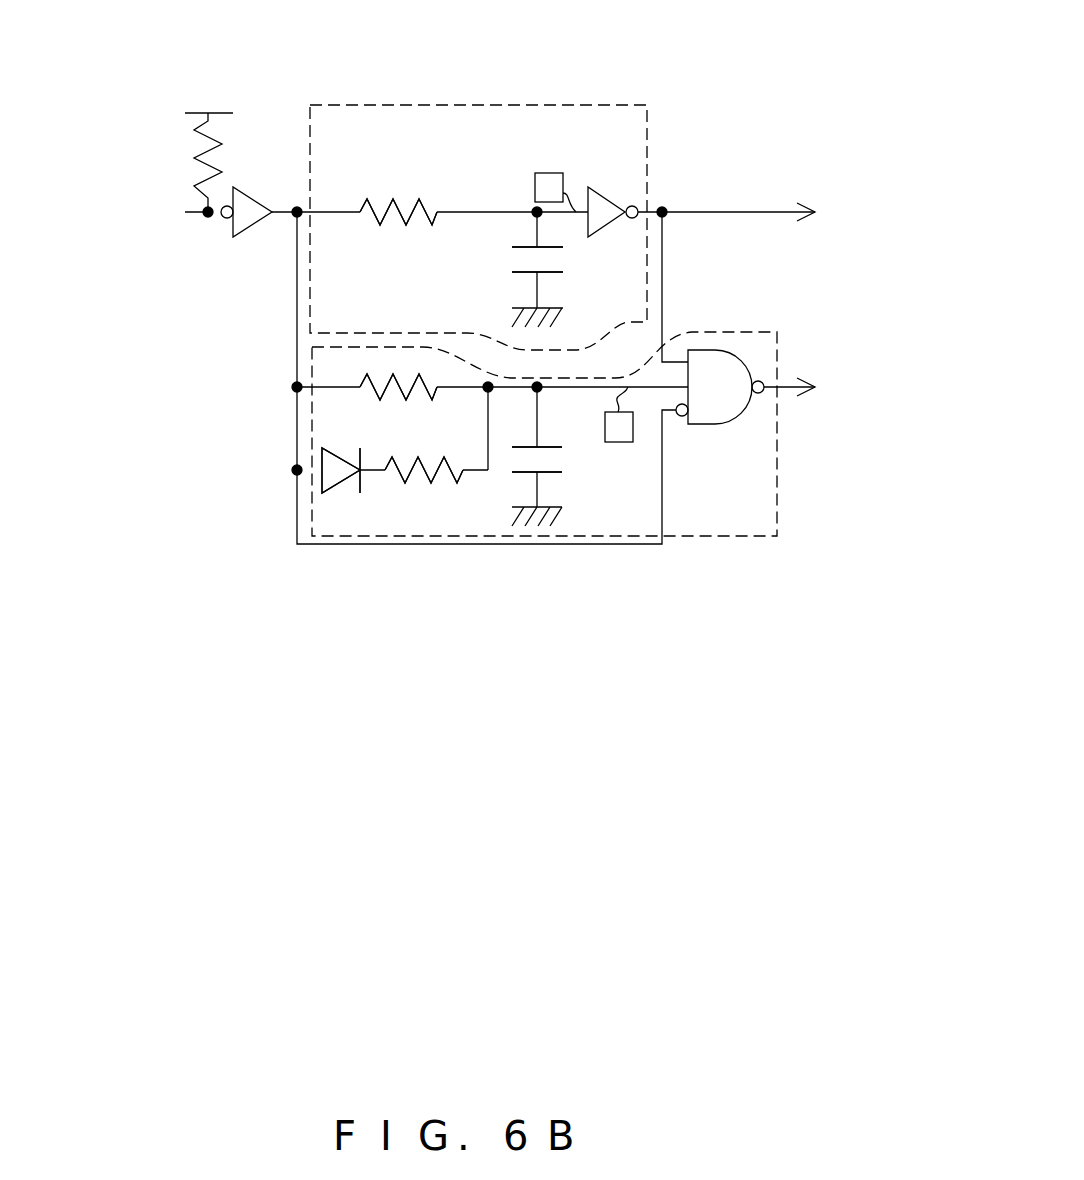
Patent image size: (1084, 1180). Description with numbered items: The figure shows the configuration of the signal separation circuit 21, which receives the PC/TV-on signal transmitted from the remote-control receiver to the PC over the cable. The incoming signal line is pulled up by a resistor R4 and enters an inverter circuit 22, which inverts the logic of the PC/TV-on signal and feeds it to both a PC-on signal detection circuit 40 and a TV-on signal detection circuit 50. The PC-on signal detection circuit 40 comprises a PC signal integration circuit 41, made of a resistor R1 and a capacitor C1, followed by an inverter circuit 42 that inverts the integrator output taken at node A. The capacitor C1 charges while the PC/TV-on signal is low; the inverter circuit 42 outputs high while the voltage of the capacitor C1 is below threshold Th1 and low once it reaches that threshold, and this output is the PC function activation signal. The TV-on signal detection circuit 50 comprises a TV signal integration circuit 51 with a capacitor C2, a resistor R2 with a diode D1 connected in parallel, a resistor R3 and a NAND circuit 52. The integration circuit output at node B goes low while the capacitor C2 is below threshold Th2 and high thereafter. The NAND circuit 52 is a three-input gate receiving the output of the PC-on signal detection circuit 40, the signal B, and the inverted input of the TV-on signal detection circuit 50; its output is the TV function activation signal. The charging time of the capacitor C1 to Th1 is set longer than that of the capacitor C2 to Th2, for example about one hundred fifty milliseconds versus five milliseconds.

The signal separation circuit 21 is at (582, 86).
The inverter circuit 22 is at (247, 233).
The PC-on signal detection circuit 40 is at (472, 105).
The PC signal integration circuit 41 is at (573, 187).
The inverter circuit 42 is at (609, 200).
The TV-on signal detection circuit 50 is at (717, 536).
The TV signal integration circuit 51 is at (563, 552).
The NAND circuit 52 is at (733, 421).
The resistor R1 is at (398, 231).
The resistor R2 is at (398, 402).
The resistor R3 is at (424, 485).
The resistor R4 is at (220, 162).
The capacitor C1 is at (522, 260).
The capacitor C2 is at (562, 460).
The diode D1 is at (330, 481).
The output voltage of the PC signal integration circuit A is at (555, 192).
The signal outputted from the TV integration circuit B is at (619, 414).